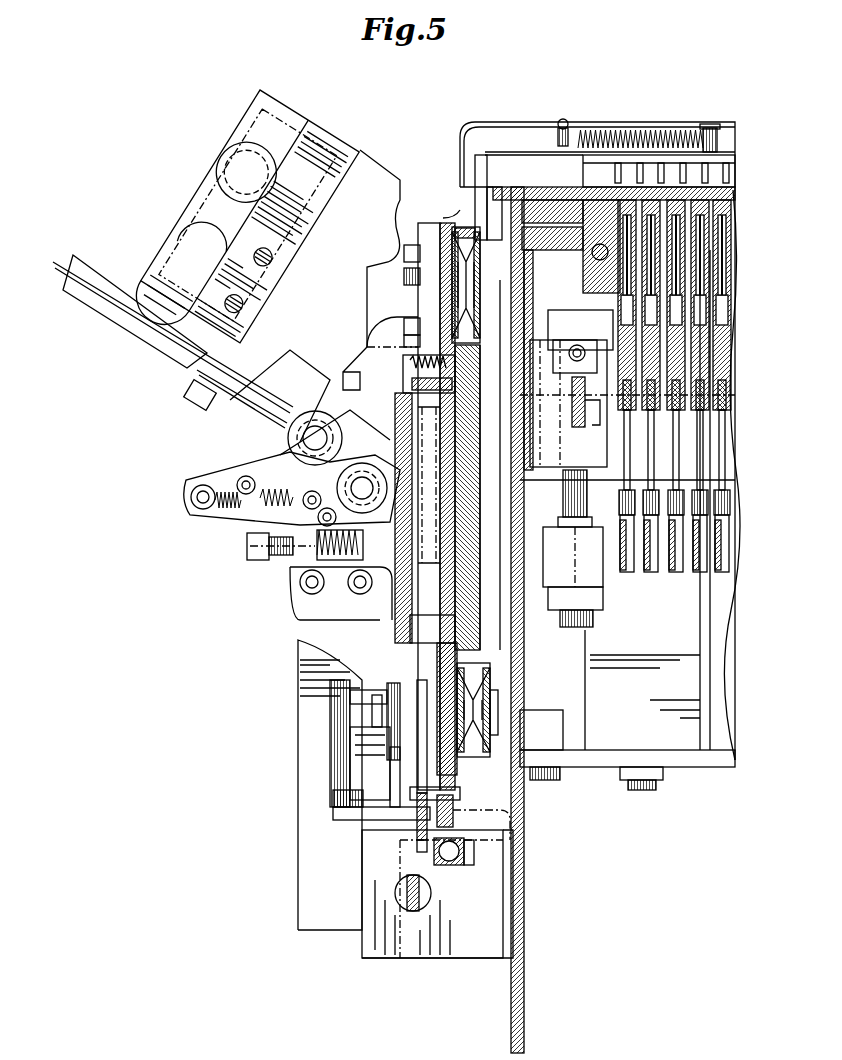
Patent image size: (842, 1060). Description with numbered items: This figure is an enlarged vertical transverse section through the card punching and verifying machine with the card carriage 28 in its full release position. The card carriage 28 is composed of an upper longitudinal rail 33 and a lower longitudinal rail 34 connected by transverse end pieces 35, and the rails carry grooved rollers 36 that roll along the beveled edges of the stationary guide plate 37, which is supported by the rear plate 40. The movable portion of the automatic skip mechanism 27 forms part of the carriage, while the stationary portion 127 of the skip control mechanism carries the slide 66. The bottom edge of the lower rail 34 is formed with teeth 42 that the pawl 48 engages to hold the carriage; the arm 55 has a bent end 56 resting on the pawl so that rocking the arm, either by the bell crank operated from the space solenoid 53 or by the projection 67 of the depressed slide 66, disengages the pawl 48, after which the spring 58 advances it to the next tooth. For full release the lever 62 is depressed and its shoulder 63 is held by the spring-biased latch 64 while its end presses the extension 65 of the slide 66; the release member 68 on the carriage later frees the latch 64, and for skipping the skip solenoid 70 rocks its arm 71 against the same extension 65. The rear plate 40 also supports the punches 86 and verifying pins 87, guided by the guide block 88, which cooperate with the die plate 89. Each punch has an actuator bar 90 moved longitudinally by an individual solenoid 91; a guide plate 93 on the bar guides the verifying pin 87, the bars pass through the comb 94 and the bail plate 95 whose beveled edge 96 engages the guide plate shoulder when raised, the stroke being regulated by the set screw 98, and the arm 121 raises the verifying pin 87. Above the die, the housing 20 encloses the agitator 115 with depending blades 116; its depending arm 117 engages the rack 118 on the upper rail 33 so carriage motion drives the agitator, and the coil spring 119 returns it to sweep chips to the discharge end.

The housing 20 is at (665, 122).
The automatic skip mechanism 27 is at (194, 143).
The card carriage 28 is at (436, 215).
The upper longitudinal rail 33 is at (438, 280).
The lower longitudinal rail 34 is at (447, 657).
The transverse end pieces 35 is at (438, 238).
The grooved rollers 36 is at (480, 330).
The stationary guide plate 37 is at (478, 568).
The rear plate 40 is at (525, 989).
The teeth 42 is at (440, 790).
The pawl 48 is at (460, 800).
The space solenoid 53 is at (375, 937).
The arm 55 is at (418, 830).
The bent end 56 is at (430, 845).
The spring 58 is at (437, 866).
The lever 62 is at (372, 800).
The shoulder 63 is at (378, 710).
The spring-biased latch 64 is at (372, 717).
The extension 65 is at (345, 797).
The slide 66 is at (400, 640).
The projection 67 is at (400, 805).
The release member 68 is at (480, 722).
The skip solenoid 70 is at (300, 655).
The arm 71 is at (345, 782).
The punches 86 is at (715, 302).
The verifying pins 87 is at (715, 430).
The guide block 88 is at (595, 272).
The die plate 89 is at (722, 180).
The actuator bar 90 is at (712, 356).
The solenoid 91 is at (693, 680).
The guide plate 93 is at (710, 394).
The comb 94 is at (580, 322).
The bail plate 95 is at (596, 480).
The beveled edge 96 is at (602, 428).
The set screw 98 is at (570, 626).
The agitator 115 is at (680, 148).
The blades 116 is at (705, 168).
The depending arm 117 is at (485, 196).
The rack 118 is at (468, 226).
The coil spring 119 is at (632, 122).
The arm 121 is at (690, 572).
The stationary portion of skip control mechanism 127 is at (277, 592).